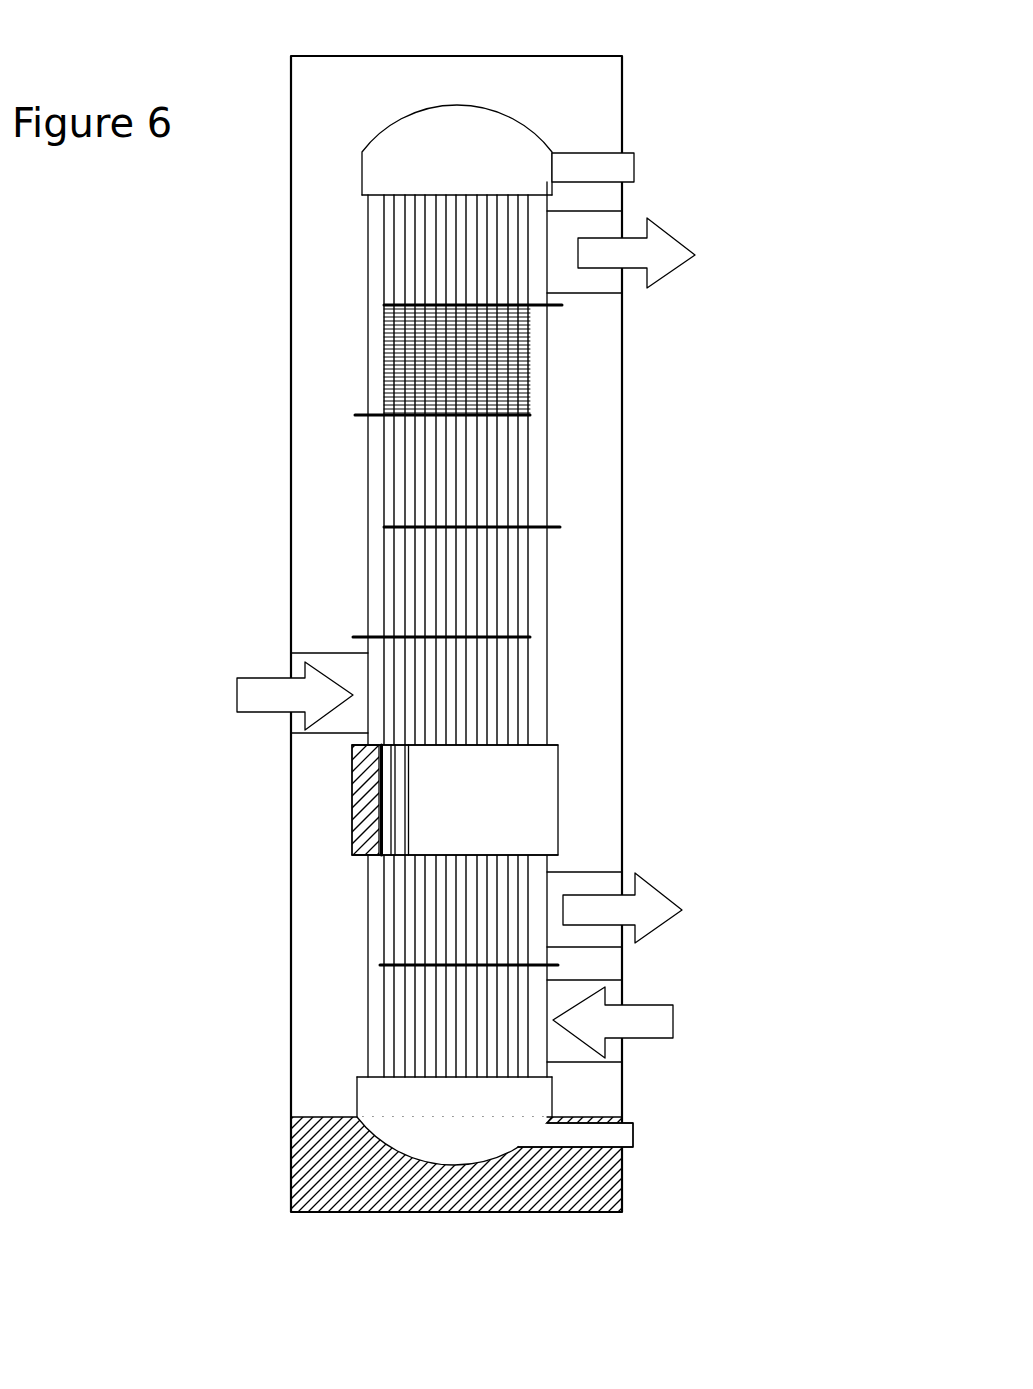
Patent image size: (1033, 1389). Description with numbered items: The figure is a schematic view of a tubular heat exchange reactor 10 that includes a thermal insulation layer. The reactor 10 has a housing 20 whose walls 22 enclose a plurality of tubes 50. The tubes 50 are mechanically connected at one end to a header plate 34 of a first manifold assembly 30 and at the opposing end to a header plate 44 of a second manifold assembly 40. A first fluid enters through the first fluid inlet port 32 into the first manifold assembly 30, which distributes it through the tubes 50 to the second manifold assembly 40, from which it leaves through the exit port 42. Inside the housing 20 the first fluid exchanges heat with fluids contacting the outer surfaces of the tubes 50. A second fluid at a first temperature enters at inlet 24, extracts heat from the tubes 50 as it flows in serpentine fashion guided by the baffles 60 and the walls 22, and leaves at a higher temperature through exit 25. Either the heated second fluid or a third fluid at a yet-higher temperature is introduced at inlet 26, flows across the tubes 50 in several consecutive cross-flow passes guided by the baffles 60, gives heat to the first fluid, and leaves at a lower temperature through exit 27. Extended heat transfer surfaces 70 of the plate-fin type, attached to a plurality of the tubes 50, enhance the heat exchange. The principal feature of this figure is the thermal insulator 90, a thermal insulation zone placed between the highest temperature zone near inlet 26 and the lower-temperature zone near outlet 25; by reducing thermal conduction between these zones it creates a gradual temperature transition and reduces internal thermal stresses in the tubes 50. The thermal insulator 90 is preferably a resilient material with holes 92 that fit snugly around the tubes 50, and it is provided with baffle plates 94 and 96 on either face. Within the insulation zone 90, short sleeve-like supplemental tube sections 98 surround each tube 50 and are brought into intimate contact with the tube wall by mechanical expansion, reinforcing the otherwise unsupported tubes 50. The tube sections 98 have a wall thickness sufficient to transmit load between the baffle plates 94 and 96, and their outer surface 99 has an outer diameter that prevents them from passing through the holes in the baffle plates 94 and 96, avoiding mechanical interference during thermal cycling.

The tubular heat exchange reactor 10 is at (237, 302).
The housing 20 is at (291, 408).
The walls 22 is at (312, 1003).
The inlet 24 is at (622, 993).
The exit 25 is at (622, 877).
The inlet 26 is at (291, 665).
The exit 27 is at (622, 284).
The first manifold assembly 30 is at (438, 152).
The first fluid inlet port 32 is at (625, 167).
The header plate 34 is at (453, 196).
The second manifold assembly 40 is at (430, 1098).
The exit port 42 is at (635, 1138).
The header plate 44 is at (469, 1078).
The tubes 50 is at (440, 450).
The baffles 60 is at (542, 632).
The extended heat transfer surfaces 70 is at (507, 333).
The thermal insulator 90 is at (558, 792).
The holes 92 is at (378, 798).
The baffle plate 94 is at (350, 745).
The baffle plate 96 is at (350, 855).
The supplemental tube sections 98 is at (396, 768).
The outer surface 99 is at (398, 790).